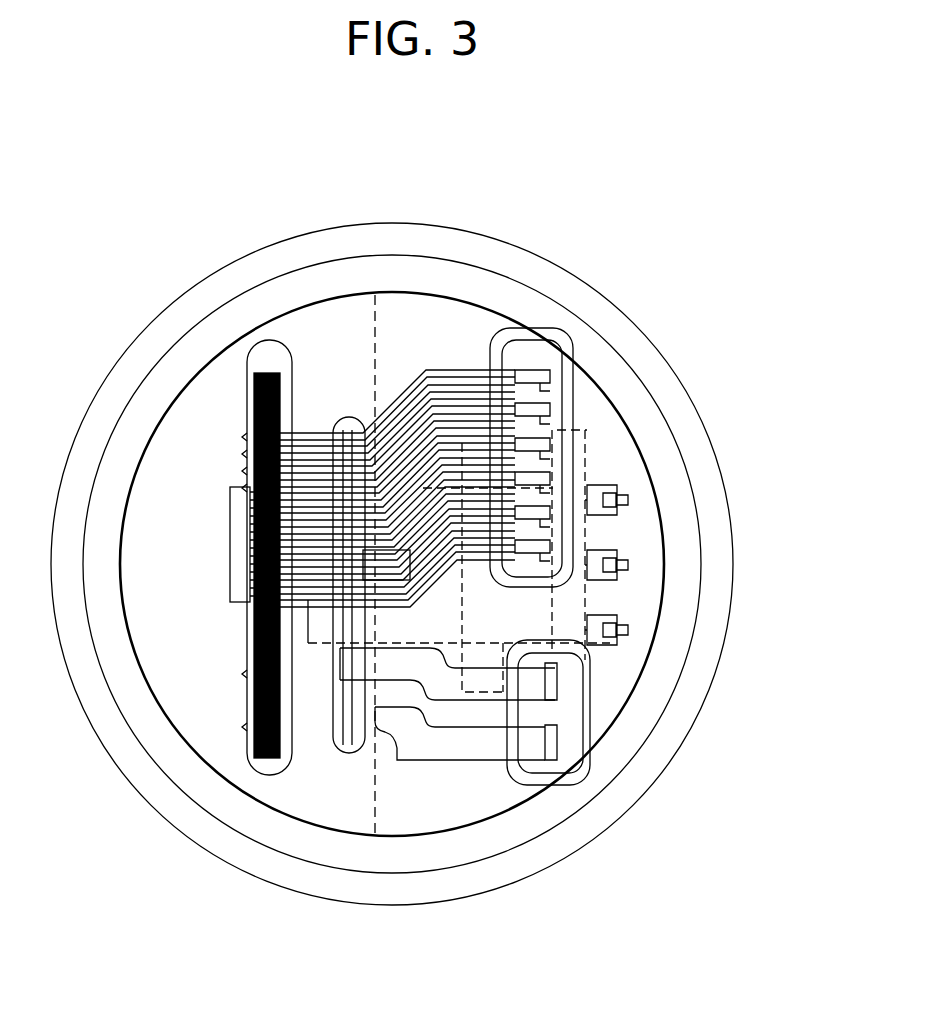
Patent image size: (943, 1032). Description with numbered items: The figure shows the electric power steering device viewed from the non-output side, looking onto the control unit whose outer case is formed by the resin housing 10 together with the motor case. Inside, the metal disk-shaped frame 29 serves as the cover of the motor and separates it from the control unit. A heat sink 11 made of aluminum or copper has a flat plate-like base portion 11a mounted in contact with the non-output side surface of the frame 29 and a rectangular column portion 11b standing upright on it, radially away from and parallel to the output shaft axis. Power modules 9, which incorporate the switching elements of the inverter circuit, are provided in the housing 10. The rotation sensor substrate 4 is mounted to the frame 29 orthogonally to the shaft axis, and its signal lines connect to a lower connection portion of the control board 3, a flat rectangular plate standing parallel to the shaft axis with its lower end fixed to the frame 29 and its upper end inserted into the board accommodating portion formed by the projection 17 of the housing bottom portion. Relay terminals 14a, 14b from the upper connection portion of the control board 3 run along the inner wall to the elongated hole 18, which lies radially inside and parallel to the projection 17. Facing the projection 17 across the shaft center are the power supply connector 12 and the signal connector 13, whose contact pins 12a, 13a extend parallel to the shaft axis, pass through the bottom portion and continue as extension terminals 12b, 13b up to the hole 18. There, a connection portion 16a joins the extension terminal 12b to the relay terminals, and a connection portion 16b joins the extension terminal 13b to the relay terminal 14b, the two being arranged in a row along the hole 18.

The control board 3 is at (250, 760).
The rotation sensor substrate 4 is at (253, 633).
The power modules 9 is at (610, 550).
The housing 10 is at (523, 270).
The heat sink 11 is at (457, 793).
The base portion 11a is at (490, 785).
The column portion 11b is at (573, 630).
The power supply connector 12 is at (610, 700).
The contact pin 12a is at (555, 745).
The extension terminal 12b is at (417, 760).
The signal connector 13 is at (575, 345).
The contact pin 13a is at (553, 477).
The extension terminal 13b is at (390, 427).
The relay terminal 14a is at (310, 733).
The relay terminal 14b is at (323, 433).
The connection portion 16a is at (345, 747).
The connection portion 16b is at (340, 420).
The projection 17 is at (270, 353).
The hole 18 is at (363, 773).
The frame 29 is at (153, 743).